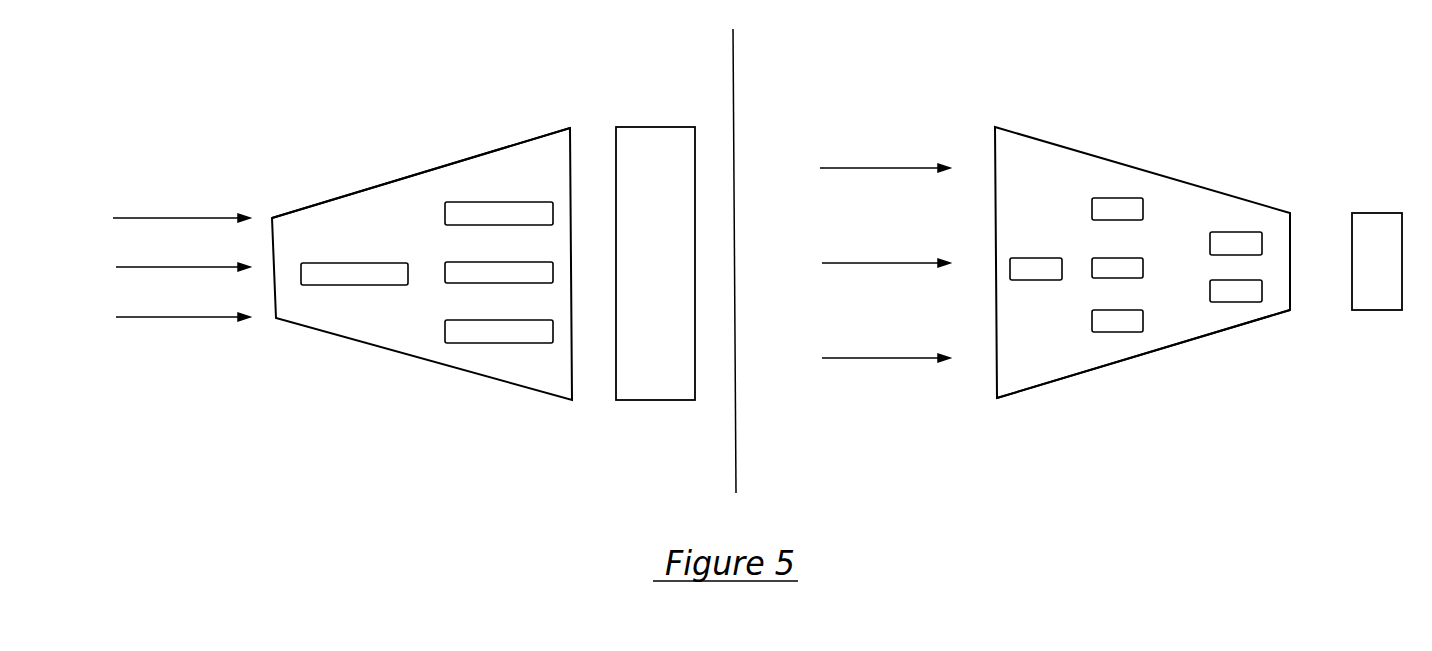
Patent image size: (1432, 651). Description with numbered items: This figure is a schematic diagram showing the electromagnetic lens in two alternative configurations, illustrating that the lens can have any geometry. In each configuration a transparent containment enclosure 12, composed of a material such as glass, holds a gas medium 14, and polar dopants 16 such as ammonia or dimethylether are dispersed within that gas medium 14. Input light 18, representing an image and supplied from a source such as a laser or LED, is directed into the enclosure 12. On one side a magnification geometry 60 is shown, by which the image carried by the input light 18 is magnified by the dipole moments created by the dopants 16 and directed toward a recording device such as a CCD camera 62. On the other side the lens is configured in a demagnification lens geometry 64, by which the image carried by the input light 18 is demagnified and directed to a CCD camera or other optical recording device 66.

The containment enclosure 12 is at (487, 378).
The gas medium 14 is at (418, 327).
The polar dopants 16 is at (343, 287).
The input light 18 is at (175, 218).
The magnification geometry 60 is at (397, 178).
The CCD camera 62 is at (652, 127).
The demagnification lens geometry 64 is at (1097, 369).
The detector (CCD) 66 is at (1372, 212).